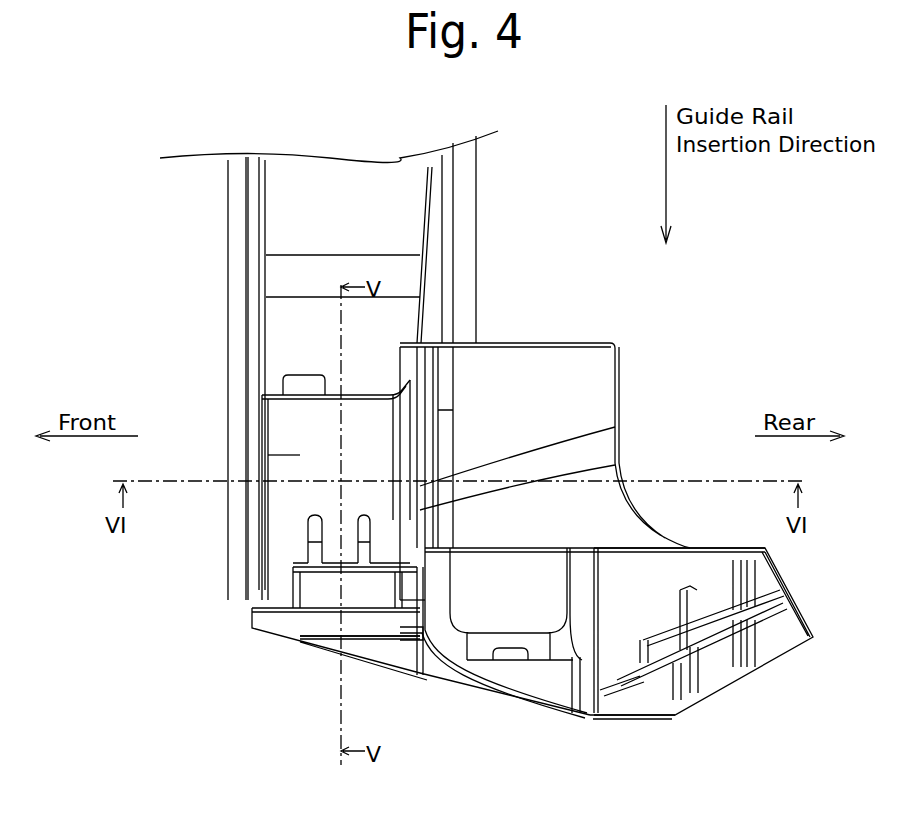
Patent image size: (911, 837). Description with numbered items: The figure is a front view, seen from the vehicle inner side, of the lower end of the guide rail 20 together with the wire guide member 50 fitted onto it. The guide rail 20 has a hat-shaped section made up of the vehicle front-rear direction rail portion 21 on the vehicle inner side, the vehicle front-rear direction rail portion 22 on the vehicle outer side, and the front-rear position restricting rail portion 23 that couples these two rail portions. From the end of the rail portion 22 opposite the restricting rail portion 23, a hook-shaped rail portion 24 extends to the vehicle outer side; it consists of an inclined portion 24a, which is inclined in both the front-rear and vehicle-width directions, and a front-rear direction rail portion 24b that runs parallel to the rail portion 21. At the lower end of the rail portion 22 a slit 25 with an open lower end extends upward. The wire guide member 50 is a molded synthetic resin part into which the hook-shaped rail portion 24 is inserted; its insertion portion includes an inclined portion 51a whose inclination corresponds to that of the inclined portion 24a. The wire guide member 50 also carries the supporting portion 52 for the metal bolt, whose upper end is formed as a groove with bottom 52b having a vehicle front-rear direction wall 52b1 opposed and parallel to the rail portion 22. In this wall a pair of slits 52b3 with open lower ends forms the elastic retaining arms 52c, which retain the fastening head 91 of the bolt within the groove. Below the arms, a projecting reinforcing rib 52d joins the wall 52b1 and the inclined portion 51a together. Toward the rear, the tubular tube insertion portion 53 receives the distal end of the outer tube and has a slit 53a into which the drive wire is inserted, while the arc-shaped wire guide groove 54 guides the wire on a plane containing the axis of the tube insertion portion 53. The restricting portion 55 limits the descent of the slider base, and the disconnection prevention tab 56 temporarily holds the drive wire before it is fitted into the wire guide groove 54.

The guide rail 20 is at (398, 336).
The vehicle front-rear direction rail portion 21 is at (240, 167).
The vehicle front-rear direction rail portion 22 is at (340, 200).
The front-rear position restricting rail portion 23 is at (255, 167).
The hook-shaped rail portion 24 is at (526, 235).
The inclined portion 24a is at (446, 180).
The front-rear direction rail portion 24b is at (468, 193).
The slit 25 is at (410, 525).
The wire guide member 50 is at (491, 536).
The inclined portion 51a is at (415, 473).
The supporting portion 52 is at (286, 518).
The groove with bottom 52b is at (335, 392).
The vehicle front-rear direction wall 52b1 is at (300, 455).
The slits 52b3 is at (360, 548).
The elastic retaining arms 52c is at (323, 547).
The reinforcing rib 52d is at (352, 625).
The tubular tube insertion portion 53 is at (768, 648).
The slit 53a is at (676, 718).
The wire guide groove 54 is at (440, 645).
The restricting portion 55 is at (550, 530).
The disconnection prevention tab 56 is at (410, 637).
The fastening head 91 is at (350, 550).